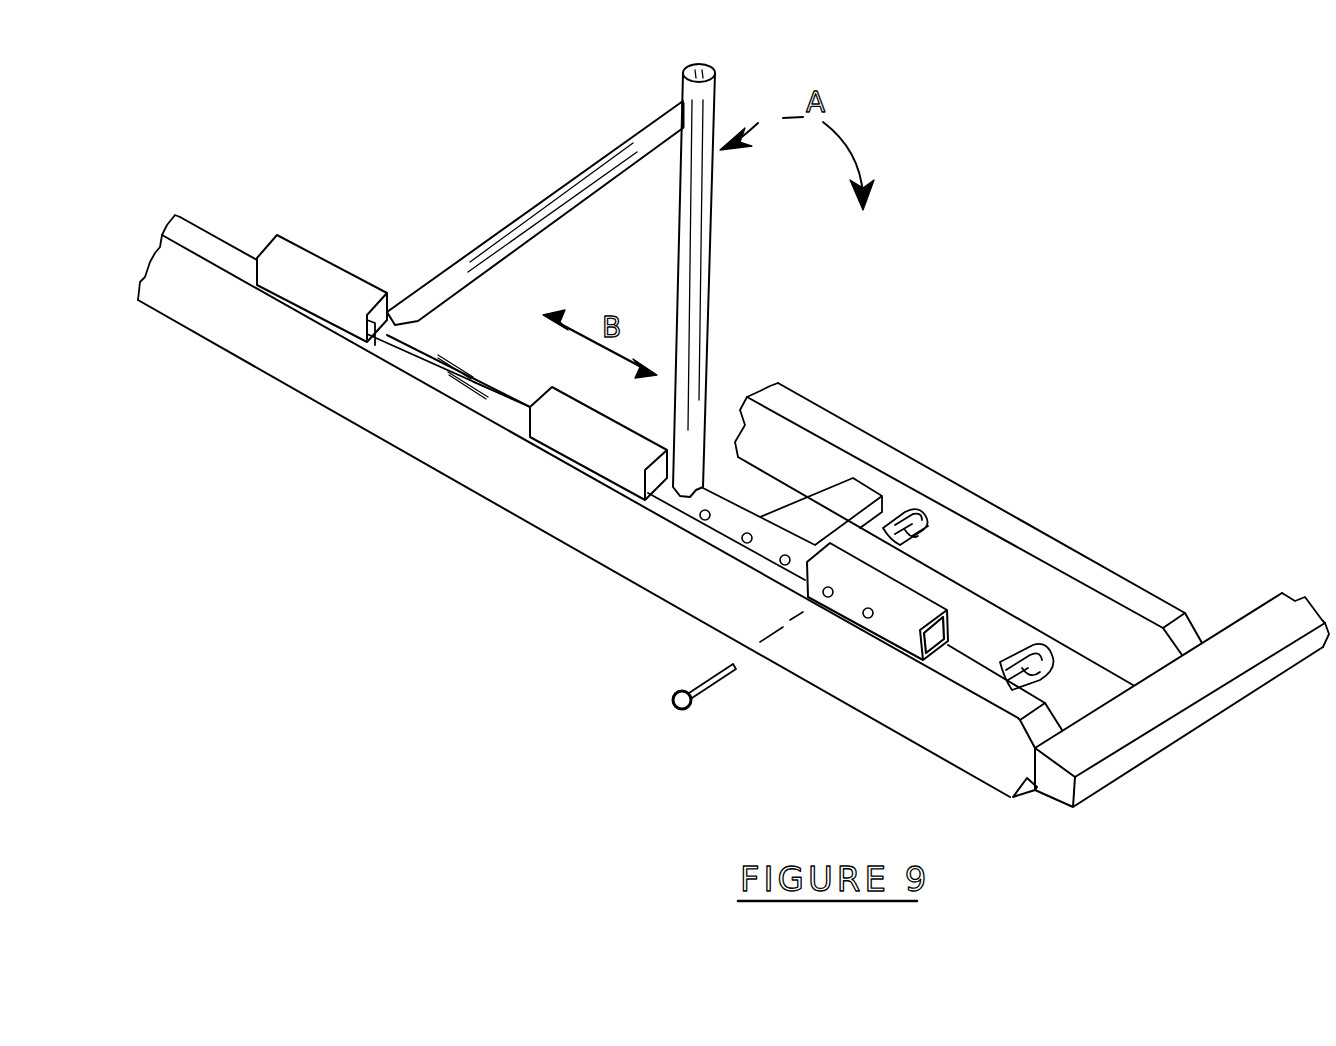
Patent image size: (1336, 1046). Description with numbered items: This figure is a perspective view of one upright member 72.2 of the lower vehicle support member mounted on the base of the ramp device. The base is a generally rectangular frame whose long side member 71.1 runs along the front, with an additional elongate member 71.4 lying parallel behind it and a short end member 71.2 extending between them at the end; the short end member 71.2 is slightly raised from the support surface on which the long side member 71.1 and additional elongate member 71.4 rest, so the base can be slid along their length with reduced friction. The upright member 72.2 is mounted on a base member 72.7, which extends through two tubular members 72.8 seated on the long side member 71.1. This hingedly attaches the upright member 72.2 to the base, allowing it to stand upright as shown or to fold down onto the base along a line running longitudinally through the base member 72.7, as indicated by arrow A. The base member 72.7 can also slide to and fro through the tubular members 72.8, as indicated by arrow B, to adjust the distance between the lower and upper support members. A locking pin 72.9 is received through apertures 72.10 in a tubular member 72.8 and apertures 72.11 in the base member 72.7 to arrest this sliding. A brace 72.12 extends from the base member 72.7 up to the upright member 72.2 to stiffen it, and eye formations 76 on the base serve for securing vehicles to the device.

The long side member 71.1 is at (945, 728).
The short end member 71.2 is at (1167, 730).
The additional elongate member 71.4 is at (1092, 580).
The upright member 72.2 is at (693, 255).
The base member 72.7 is at (483, 382).
The tubular member 72.8 is at (330, 307).
The locking pin 72.9 is at (718, 680).
The aperture 72.10 is at (875, 610).
The aperture 72.11 is at (753, 533).
The brace 72.12 is at (528, 220).
The eye formation 76 is at (1058, 645).